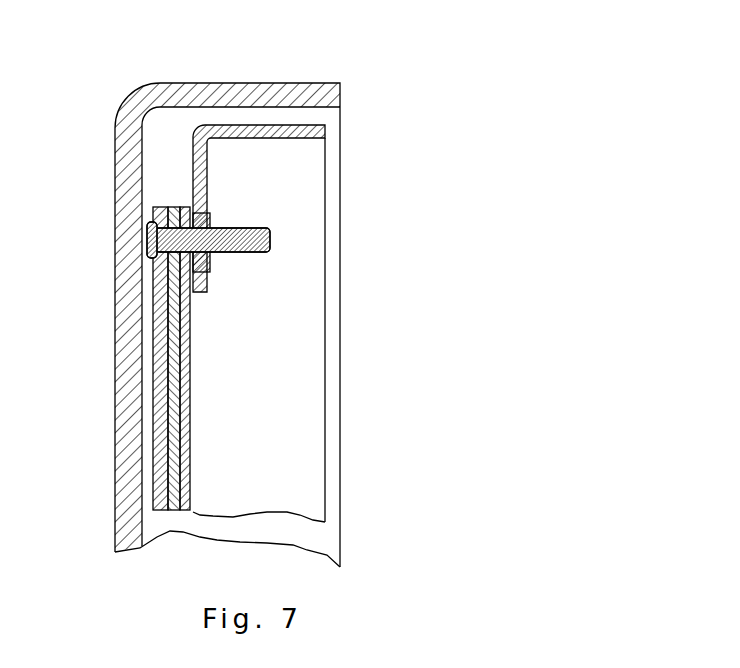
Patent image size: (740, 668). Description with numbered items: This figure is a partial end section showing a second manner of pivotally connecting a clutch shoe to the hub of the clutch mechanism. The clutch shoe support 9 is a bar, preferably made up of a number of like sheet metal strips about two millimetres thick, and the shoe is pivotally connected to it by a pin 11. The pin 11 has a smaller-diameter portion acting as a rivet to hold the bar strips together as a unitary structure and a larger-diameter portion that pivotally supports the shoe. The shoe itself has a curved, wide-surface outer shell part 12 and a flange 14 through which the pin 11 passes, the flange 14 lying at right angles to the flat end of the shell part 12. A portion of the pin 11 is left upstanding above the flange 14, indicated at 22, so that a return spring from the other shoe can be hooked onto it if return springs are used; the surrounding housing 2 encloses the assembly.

The outer case wall 2 is at (175, 83).
The clutch shoe support 9 is at (191, 382).
The pin 11 is at (147, 237).
The outer shell part 12 is at (257, 138).
The flange 14 is at (281, 307).
The upstanding portion of pin 22 is at (257, 227).